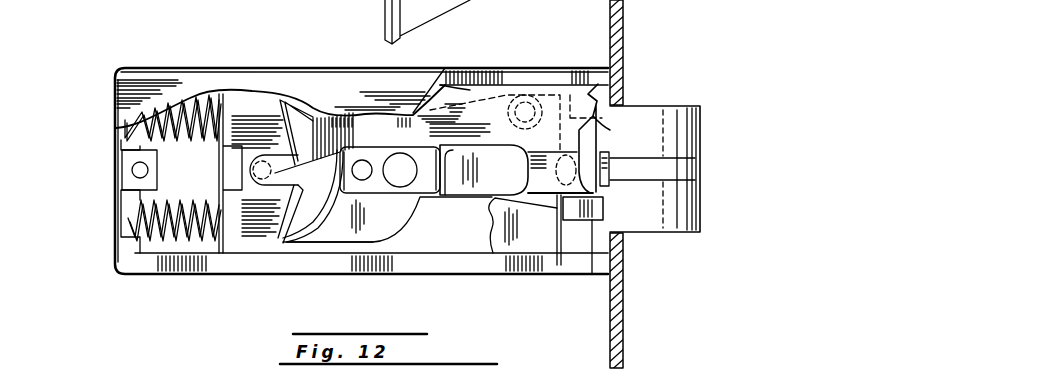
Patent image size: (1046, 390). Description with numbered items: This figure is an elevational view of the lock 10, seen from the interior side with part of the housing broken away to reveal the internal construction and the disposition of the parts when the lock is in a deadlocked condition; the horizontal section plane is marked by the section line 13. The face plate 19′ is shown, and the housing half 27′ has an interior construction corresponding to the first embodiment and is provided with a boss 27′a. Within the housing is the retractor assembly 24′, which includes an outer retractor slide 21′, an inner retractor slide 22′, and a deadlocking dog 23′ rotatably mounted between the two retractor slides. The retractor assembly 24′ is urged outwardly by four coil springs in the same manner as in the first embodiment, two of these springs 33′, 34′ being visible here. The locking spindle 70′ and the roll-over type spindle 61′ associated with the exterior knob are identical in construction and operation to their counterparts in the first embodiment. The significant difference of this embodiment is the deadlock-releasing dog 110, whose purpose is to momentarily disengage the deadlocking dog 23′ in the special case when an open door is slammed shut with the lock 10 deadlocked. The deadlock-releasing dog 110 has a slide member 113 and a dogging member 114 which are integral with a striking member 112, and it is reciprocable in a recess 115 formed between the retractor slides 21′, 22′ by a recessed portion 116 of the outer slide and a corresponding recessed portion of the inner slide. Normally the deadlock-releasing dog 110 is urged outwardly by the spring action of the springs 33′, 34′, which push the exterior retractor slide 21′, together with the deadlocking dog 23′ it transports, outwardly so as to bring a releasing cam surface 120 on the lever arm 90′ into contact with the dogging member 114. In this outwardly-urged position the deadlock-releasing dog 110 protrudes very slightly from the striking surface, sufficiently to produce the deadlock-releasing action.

The lock 10 is at (675, 58).
The section line 13 is at (89, 154).
The face plate 19′ is at (623, 7).
The outer retractor slide 21′ is at (503, 243).
The inner retractor slide 22′ is at (423, 242).
The deadlocking dog 23′ is at (350, 110).
The retractor assembly 24′ is at (243, 247).
The housing half 27′ is at (340, 232).
The boss 27′a is at (380, 130).
The coil spring 33′ is at (187, 110).
The coil spring 34′ is at (197, 238).
The roll-over type spindle 61′ is at (307, 225).
The locking spindle 70′ is at (253, 173).
The lever arm 90′ is at (543, 80).
The deadlock-releasing dog 110 is at (688, 177).
The striking member 112 is at (668, 178).
The slide member 113 is at (592, 232).
The dogging member 114 is at (610, 156).
The recess 115 is at (562, 236).
The recessed portion 116 is at (567, 240).
The releasing cam surface 120 is at (592, 84).